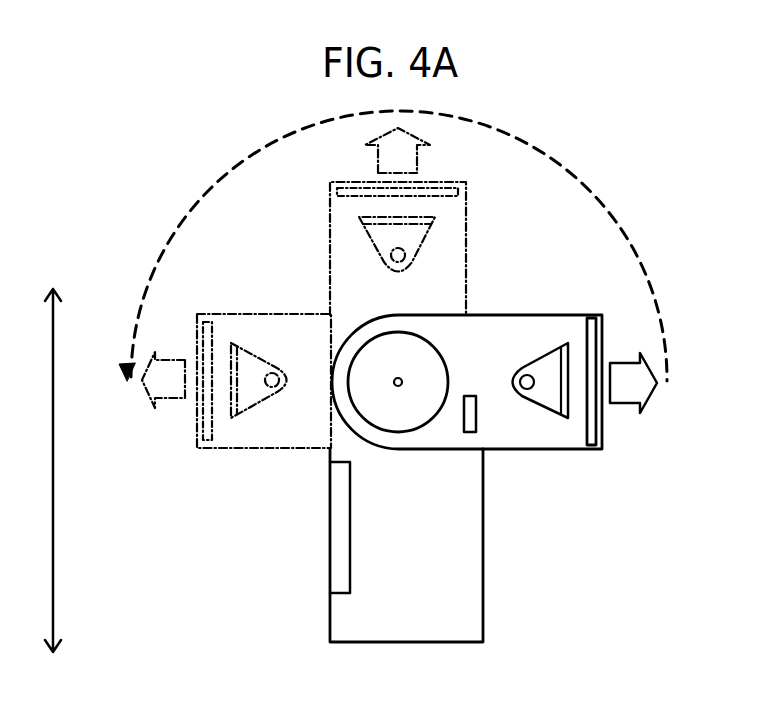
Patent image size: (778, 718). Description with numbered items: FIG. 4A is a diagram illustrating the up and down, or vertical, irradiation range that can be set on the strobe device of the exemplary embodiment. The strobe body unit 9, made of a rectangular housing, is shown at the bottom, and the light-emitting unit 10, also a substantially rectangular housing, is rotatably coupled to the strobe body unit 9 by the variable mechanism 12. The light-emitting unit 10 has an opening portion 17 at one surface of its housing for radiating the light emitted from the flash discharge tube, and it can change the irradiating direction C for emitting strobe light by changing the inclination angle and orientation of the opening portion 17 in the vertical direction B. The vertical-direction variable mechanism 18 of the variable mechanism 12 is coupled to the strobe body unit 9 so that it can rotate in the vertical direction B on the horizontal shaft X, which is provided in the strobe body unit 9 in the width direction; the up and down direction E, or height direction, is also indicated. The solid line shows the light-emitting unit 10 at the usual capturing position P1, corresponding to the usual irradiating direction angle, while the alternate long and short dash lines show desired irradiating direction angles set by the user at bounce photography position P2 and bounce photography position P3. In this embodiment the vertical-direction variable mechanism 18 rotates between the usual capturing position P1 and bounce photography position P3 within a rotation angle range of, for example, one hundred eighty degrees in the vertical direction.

The strobe body unit 9 is at (482, 607).
The light-emitting unit 10 is at (558, 449).
The variable mechanism 12 is at (353, 403).
The opening portion 17 is at (602, 432).
The vertical-direction variable mechanism 18 is at (340, 420).
The horizontal shaft X is at (397, 385).
The vertical direction B is at (393, 246).
The irradiating direction C is at (633, 383).
The up and down direction E is at (58, 470).
The usual capturing position P1 is at (500, 449).
The bounce photography position P2 is at (466, 277).
The bounce photography position P3 is at (220, 313).